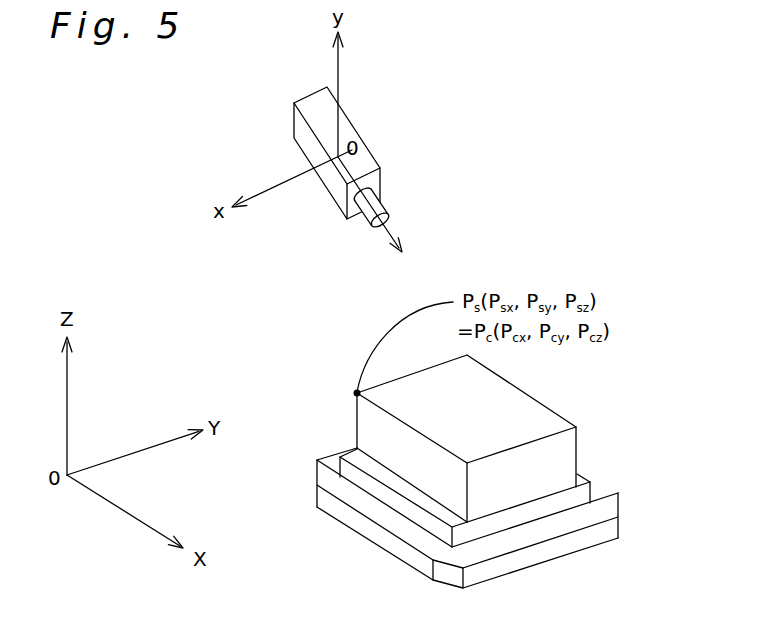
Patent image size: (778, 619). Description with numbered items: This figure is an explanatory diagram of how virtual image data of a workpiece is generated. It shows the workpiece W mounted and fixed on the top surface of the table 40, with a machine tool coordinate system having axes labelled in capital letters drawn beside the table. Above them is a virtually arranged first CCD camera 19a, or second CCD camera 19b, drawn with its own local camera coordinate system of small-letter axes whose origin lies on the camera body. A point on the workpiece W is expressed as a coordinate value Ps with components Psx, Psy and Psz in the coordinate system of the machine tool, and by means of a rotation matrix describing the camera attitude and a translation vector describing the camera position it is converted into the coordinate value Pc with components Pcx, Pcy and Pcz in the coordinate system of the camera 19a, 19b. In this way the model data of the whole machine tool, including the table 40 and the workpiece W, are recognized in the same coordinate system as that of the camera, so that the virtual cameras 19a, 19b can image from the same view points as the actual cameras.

The first CCD camera 19a is at (370, 161).
The second CCD camera 19b is at (422, 183).
The workpiece W is at (517, 412).
The table 40 is at (603, 500).